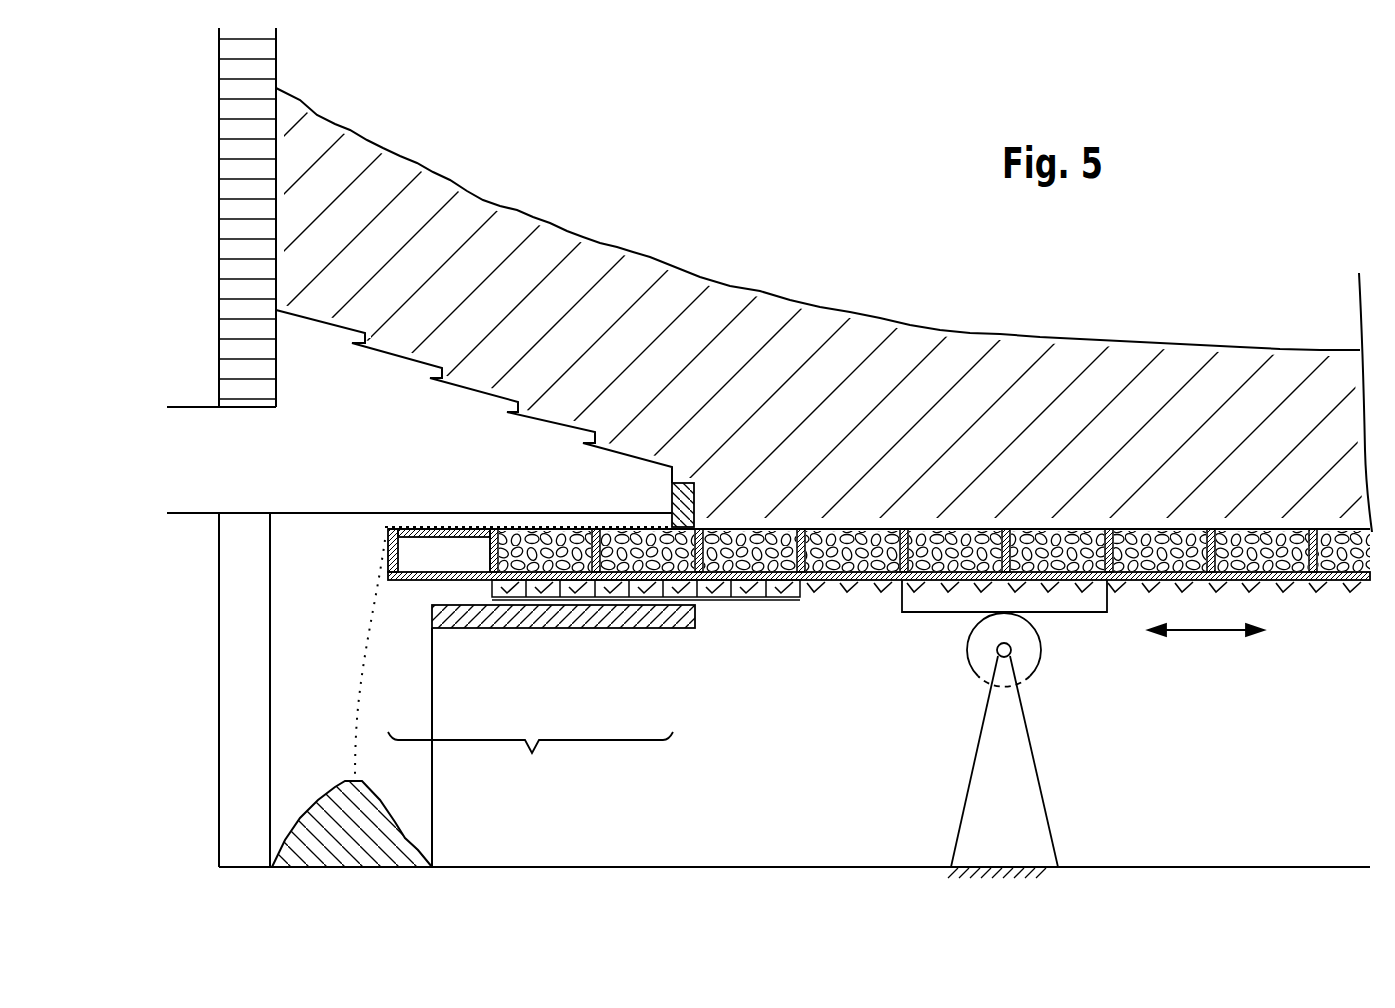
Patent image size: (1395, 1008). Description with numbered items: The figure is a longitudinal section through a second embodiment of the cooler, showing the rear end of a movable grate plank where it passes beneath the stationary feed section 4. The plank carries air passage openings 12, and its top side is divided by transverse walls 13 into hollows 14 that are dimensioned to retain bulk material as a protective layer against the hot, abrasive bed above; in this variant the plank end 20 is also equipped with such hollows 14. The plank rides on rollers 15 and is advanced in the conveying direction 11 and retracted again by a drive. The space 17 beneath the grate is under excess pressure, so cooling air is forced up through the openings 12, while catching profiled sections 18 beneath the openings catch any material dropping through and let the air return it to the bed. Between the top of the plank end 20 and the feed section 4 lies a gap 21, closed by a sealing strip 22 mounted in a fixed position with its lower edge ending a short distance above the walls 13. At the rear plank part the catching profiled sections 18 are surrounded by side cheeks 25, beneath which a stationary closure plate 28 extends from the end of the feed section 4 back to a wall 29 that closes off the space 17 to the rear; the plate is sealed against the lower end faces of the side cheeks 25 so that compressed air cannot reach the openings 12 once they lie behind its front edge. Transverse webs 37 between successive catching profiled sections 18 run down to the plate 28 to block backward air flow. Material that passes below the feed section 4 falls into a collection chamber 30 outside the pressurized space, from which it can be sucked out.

The feed section 4 is at (472, 412).
The conveying direction 11 is at (1205, 633).
The air passage openings 12 is at (718, 575).
The transverse walls 13 is at (932, 582).
The hollows 14 is at (553, 553).
The rollers 15 is at (1028, 662).
The space beneath the grate 17 is at (790, 795).
The catching profiled sections 18 is at (757, 590).
The plank end 20 is at (530, 759).
The gap 21 is at (520, 522).
The sealing strip 22 is at (672, 498).
The side cheeks 25 is at (732, 590).
The closure plate 28 is at (650, 615).
The wall 29 is at (433, 703).
The collection chamber 30 is at (305, 735).
The transverse webs 37 is at (628, 590).